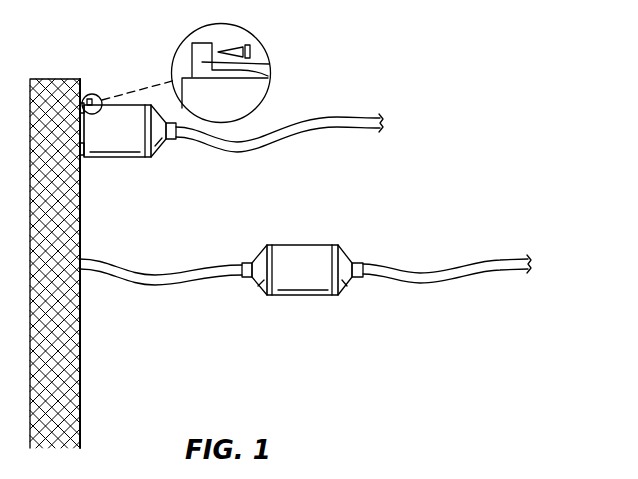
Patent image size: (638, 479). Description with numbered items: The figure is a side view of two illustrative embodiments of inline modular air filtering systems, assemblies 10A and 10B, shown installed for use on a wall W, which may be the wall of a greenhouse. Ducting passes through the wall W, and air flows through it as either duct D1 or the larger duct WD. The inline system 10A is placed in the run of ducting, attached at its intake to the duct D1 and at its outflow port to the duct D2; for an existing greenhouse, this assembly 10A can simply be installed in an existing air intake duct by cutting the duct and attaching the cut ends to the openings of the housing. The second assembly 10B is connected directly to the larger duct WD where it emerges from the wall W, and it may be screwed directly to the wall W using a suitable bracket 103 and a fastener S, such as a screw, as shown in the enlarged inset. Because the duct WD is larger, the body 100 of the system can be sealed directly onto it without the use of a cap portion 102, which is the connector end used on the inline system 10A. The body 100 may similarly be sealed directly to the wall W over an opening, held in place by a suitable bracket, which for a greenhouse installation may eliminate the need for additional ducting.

The wall W is at (80, 373).
The duct WD is at (83, 140).
The assembly 10B is at (138, 168).
The inline system 10A is at (319, 234).
The body 100 is at (302, 262).
The cap portion 102 is at (258, 262).
The bracket 103 is at (262, 66).
The fastener S is at (251, 45).
The duct D1 is at (170, 282).
The duct D2 is at (361, 120).